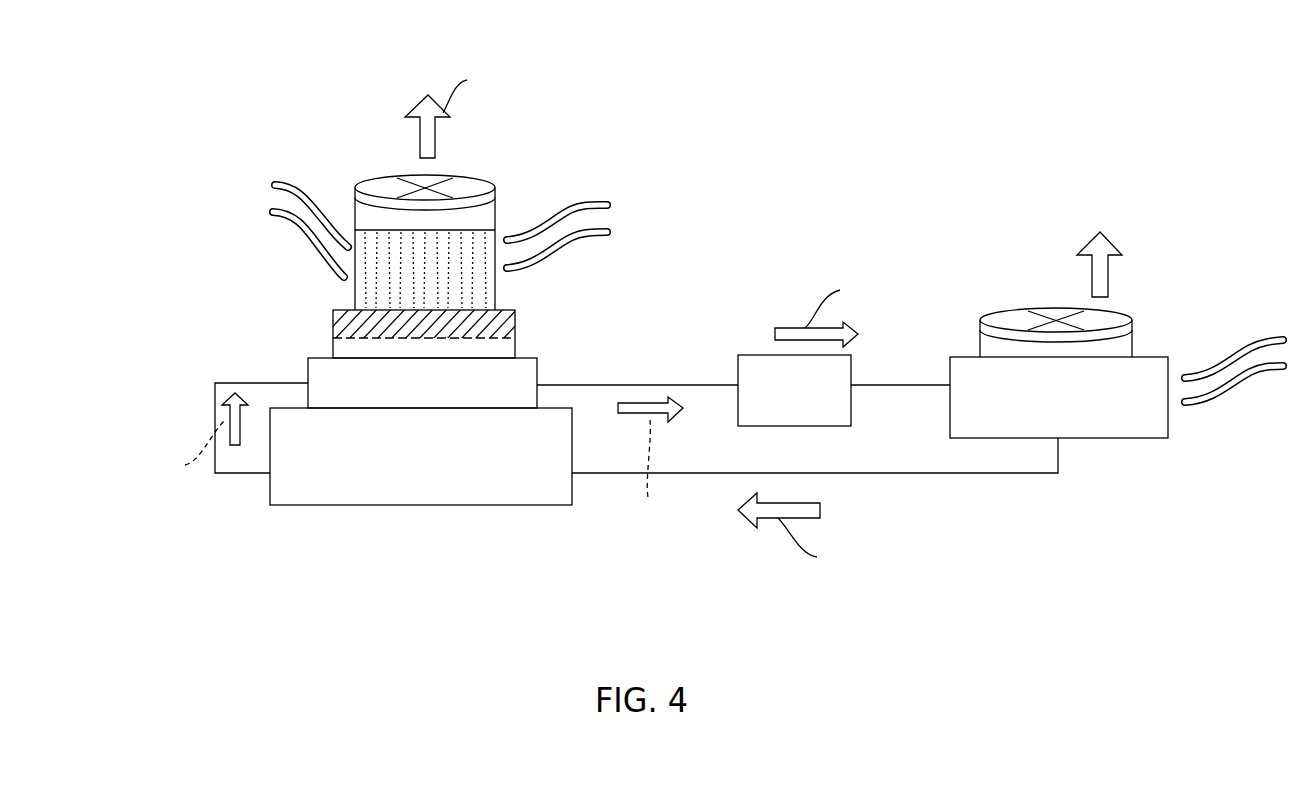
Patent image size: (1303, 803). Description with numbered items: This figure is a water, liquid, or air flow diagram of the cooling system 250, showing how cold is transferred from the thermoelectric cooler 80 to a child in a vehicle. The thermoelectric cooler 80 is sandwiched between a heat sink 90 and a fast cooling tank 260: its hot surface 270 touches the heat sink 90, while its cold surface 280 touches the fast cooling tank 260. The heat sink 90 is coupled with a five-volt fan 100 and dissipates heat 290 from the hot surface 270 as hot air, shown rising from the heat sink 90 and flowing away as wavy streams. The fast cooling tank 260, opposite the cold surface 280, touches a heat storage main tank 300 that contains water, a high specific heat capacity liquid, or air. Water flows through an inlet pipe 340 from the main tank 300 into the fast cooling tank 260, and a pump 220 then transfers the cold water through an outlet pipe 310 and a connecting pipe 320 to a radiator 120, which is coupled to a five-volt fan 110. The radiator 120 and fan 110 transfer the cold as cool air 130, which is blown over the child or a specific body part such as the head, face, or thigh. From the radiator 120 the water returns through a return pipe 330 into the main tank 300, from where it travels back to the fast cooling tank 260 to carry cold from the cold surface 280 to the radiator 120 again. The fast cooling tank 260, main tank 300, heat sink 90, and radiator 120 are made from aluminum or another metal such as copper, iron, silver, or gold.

The heat storage system 250 is at (232, 84).
The fan 100 is at (495, 190).
The heat 290 is at (603, 208).
The heat sink 90 is at (495, 298).
The thermoelectric cooler 80 is at (397, 311).
The hot surface 270 is at (327, 327).
The cold surface 280 is at (327, 348).
The fast cooling tank 260 is at (305, 380).
The heat storage main tank 300 is at (401, 482).
The inlet pipe 340 is at (225, 475).
The outlet pipe 310 is at (615, 384).
The pump 220 is at (776, 412).
The pipe 320 is at (872, 384).
The radiator 120 is at (1039, 421).
The fan 110 is at (1140, 340).
The cool air 130 is at (1112, 243).
The return pipe 330 is at (1012, 474).